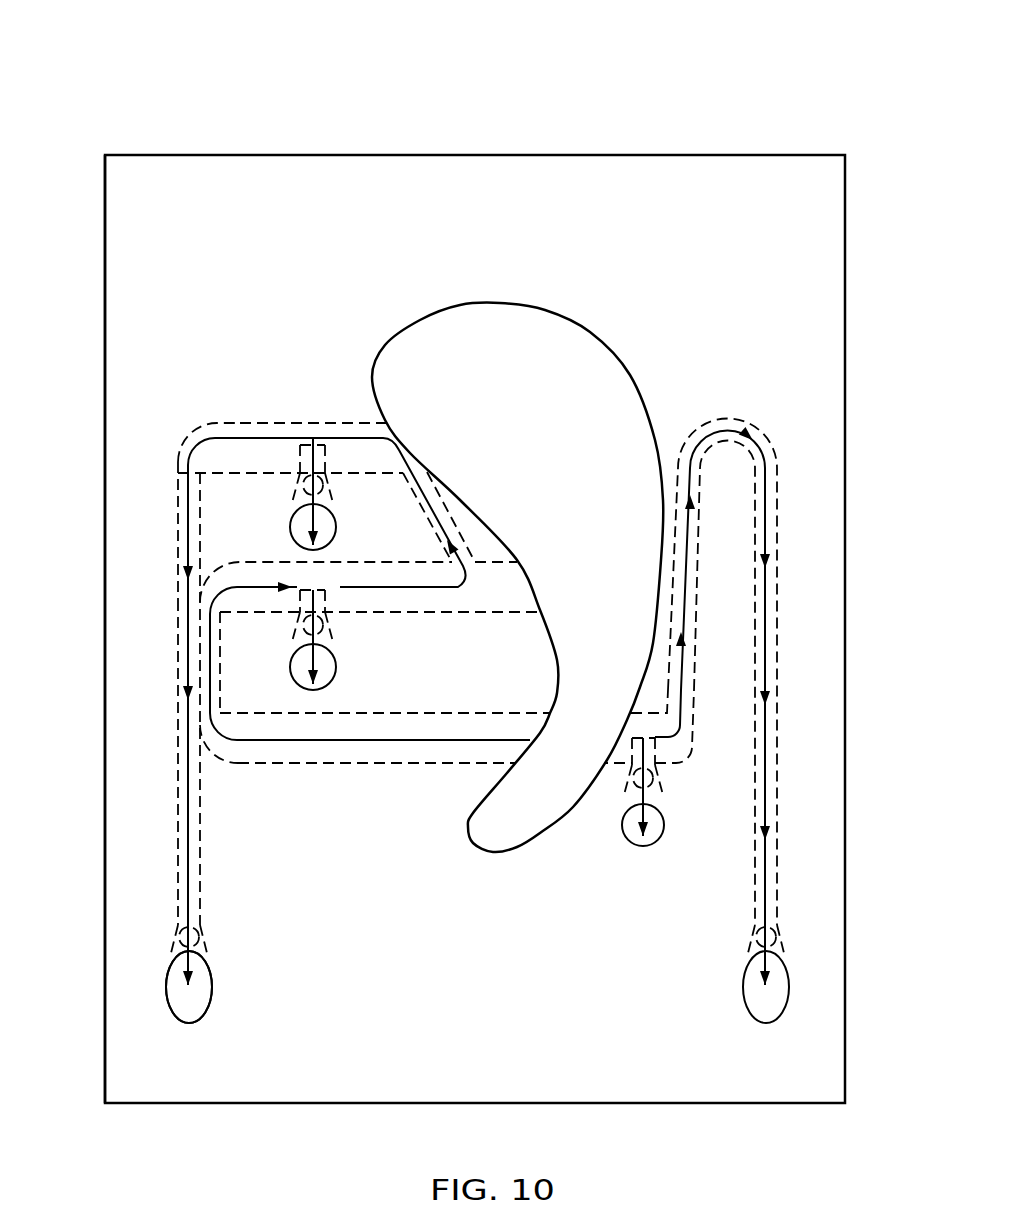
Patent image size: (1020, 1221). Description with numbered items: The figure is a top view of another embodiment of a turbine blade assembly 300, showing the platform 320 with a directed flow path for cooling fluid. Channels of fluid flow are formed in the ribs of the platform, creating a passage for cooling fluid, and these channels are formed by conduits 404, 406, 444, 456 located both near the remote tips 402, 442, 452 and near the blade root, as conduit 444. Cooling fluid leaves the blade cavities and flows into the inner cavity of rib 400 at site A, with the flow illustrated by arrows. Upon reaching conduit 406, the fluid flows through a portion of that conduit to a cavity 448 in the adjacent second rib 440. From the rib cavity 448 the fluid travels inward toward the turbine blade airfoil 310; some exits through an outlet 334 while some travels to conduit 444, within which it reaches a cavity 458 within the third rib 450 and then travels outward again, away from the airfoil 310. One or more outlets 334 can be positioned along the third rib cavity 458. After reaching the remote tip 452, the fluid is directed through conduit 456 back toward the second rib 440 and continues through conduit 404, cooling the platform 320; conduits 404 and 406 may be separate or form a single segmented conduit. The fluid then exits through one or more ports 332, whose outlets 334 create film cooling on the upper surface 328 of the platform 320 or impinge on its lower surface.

The turbine blade assembly 300 is at (176, 119).
The upper surface 328 is at (724, 164).
The platform 320 is at (103, 967).
The turbine blade airfoil 310 is at (518, 306).
The remote tip 452 is at (205, 426).
The third rib 450 is at (320, 420).
The conduit 456 is at (178, 490).
The cavity 458 is at (368, 457).
The remote tip 442 is at (238, 565).
The cavity 448 is at (392, 594).
The conduit 406 is at (222, 699).
The second rib 440 is at (473, 614).
The remote tip 402 is at (207, 749).
The rib 400 is at (398, 766).
The conduit 404 is at (177, 665).
The outlet 334 is at (337, 526).
The port 332 is at (230, 1003).
The conduit 444 is at (457, 514).
The site A is at (512, 768).